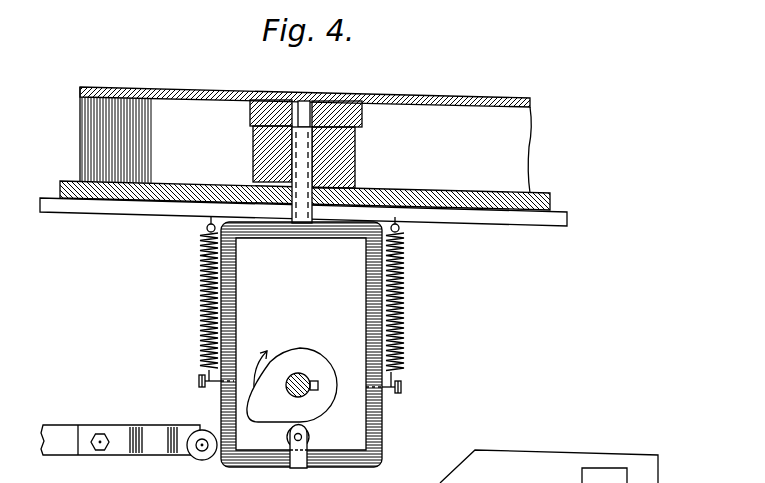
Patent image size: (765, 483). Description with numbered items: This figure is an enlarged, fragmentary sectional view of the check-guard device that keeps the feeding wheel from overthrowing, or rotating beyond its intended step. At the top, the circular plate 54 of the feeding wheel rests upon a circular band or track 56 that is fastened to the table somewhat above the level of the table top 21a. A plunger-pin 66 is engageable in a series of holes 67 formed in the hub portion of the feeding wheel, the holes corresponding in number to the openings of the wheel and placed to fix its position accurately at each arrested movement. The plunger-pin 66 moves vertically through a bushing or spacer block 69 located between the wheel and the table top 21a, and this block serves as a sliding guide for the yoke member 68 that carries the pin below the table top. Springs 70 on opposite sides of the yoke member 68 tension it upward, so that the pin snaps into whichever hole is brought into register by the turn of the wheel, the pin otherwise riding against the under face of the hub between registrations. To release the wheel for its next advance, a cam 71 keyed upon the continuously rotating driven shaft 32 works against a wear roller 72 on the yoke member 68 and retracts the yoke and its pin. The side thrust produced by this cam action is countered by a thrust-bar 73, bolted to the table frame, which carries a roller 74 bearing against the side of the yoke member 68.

The top 21a is at (73, 181).
The driven shaft 32 is at (308, 373).
The circular plate 54 is at (514, 96).
The circular band or track 56 is at (513, 145).
The plunger-pin 66 is at (343, 103).
The holes 67 is at (306, 118).
The yoke member 68 is at (372, 417).
The bushing or spacer block 69 is at (345, 162).
The springs 70 is at (203, 320).
The cam 71 is at (290, 362).
The wear roller 72 is at (312, 437).
The thrust-bar 73 is at (117, 435).
The roller 74 is at (208, 428).